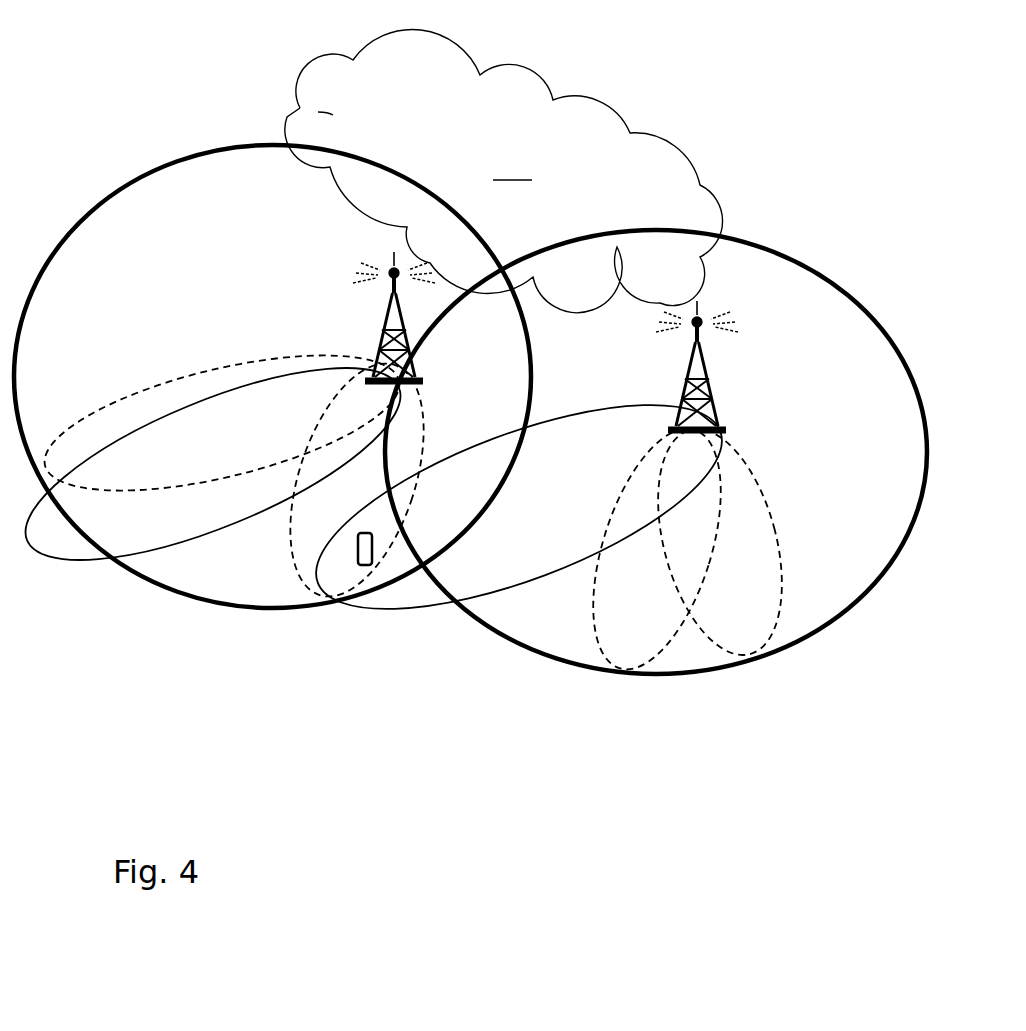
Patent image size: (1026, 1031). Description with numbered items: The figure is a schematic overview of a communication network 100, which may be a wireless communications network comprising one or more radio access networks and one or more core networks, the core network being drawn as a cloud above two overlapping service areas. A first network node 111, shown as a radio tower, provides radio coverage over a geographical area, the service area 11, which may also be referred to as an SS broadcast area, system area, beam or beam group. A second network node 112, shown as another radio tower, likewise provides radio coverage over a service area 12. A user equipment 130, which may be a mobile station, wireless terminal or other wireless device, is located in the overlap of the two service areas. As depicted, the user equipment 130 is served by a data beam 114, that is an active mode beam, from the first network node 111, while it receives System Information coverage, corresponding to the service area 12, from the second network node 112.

The communication network 100 is at (180, 70).
The service area 11 is at (830, 562).
The service area 12 is at (42, 385).
The first network node 111 is at (688, 386).
The second network node 112 is at (384, 330).
The data beam 114 is at (483, 584).
The user equipment 130 is at (376, 551).